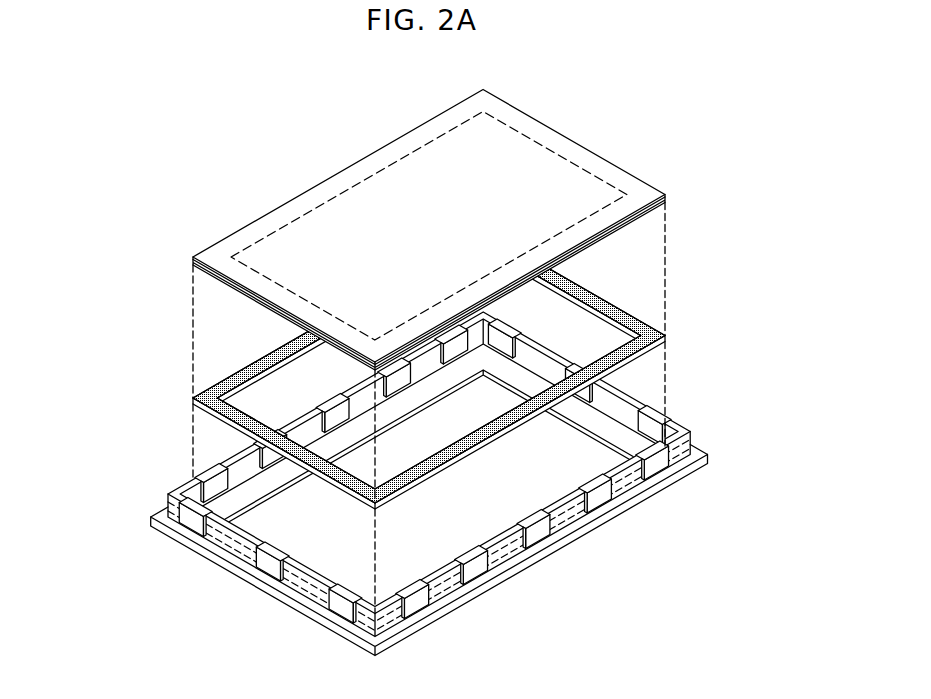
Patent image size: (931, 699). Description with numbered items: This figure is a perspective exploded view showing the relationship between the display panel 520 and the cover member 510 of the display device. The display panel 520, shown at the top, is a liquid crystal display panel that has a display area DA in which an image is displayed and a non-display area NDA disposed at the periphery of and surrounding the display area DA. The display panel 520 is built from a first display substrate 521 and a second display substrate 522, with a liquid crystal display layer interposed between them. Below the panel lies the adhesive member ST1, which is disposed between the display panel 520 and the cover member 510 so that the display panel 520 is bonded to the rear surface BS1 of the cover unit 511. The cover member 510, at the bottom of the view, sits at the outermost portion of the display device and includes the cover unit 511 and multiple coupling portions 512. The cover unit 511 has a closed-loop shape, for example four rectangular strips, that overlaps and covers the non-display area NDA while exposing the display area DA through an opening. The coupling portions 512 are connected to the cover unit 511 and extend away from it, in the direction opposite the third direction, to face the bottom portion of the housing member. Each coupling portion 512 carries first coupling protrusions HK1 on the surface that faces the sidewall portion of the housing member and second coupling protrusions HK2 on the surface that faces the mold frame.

The cover member 510 is at (386, 484).
The cover unit 511 is at (200, 553).
The coupling portions 512 is at (153, 586).
The display panel 520 is at (496, 230).
The first display substrate 521 is at (647, 197).
The second display substrate 522 is at (667, 203).
The adhesive member ST1 is at (663, 337).
The rear surface BS1 is at (247, 492).
The first coupling protrusions HK1 is at (197, 527).
The second coupling protrusions HK2 is at (195, 500).
The display area DA is at (360, 181).
The non-display area NDA is at (396, 160).